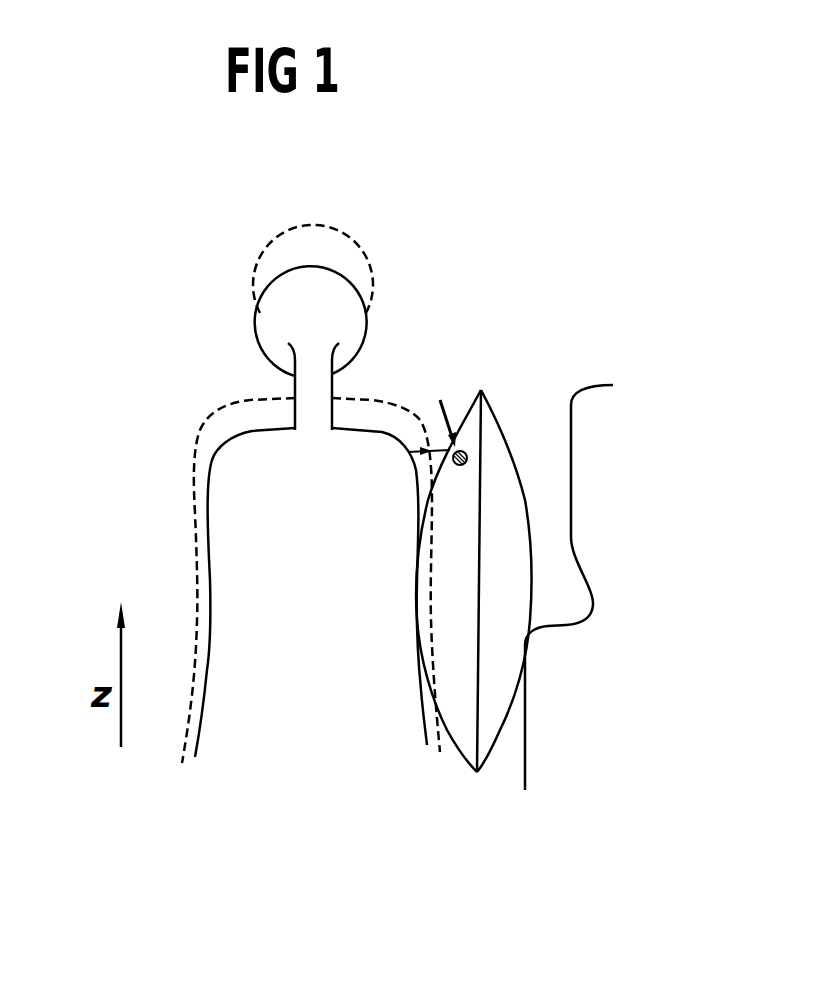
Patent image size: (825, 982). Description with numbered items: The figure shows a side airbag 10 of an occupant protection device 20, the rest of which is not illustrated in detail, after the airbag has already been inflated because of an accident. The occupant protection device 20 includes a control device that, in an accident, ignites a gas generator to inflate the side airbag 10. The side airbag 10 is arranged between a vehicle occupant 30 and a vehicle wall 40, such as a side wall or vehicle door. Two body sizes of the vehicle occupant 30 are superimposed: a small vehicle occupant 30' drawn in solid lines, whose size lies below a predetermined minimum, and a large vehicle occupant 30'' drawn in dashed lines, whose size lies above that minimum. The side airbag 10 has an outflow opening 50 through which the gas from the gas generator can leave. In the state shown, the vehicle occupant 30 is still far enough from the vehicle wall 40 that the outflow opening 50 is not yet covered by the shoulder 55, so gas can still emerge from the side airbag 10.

The side airbag 10 is at (490, 742).
The occupant protection device 20 is at (560, 765).
The vehicle occupant 30 is at (255, 308).
The small vehicle occupant 30' is at (248, 574).
The large vehicle occupant 30'' is at (277, 547).
The vehicle wall 40 is at (570, 495).
The outflow opening 50 is at (465, 453).
The shoulder 55 is at (383, 403).